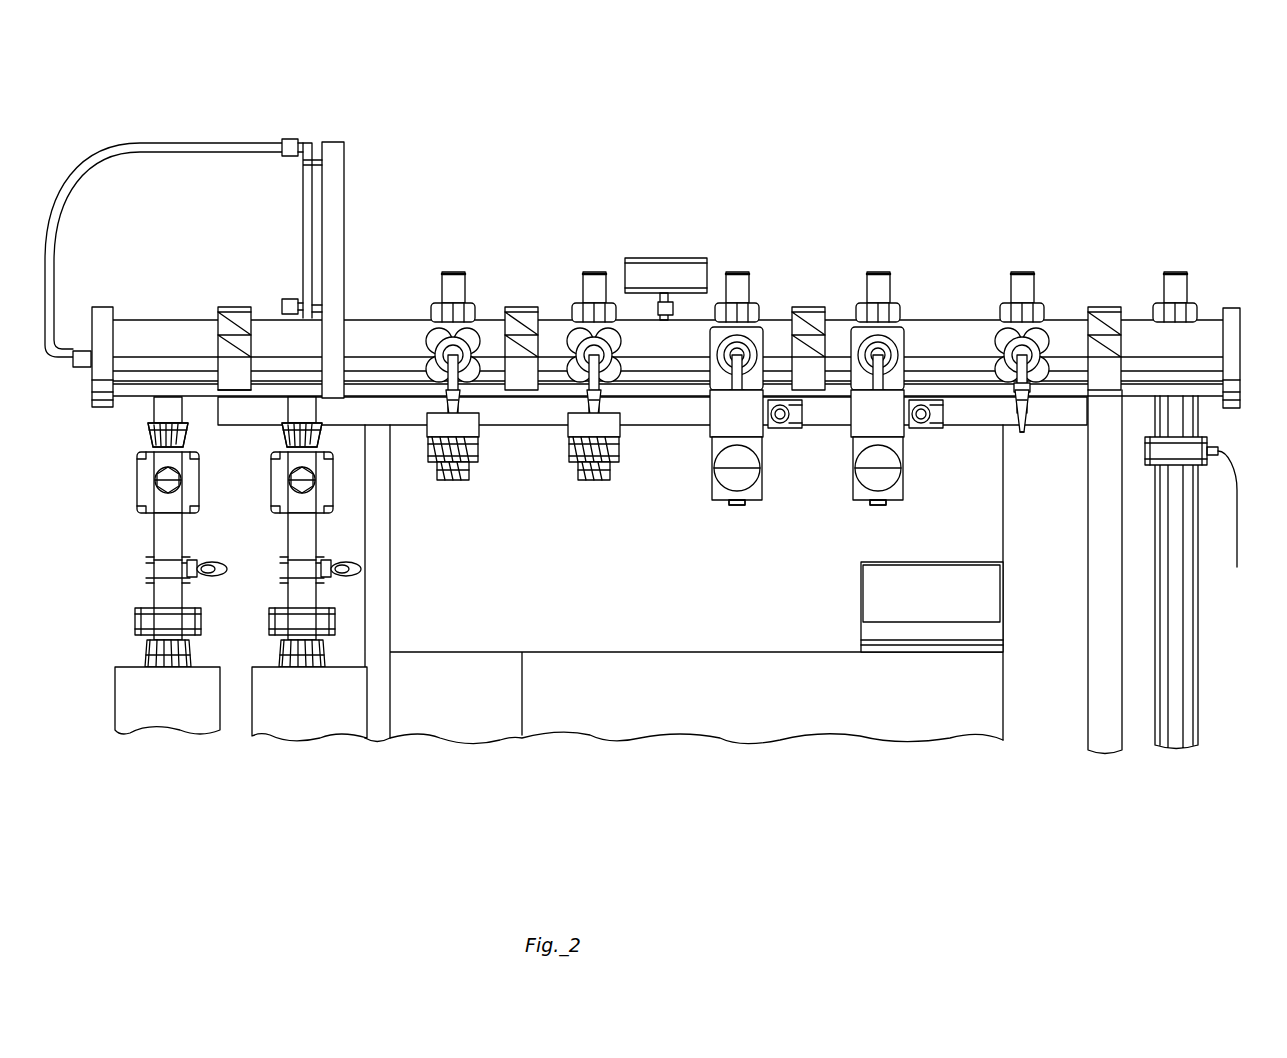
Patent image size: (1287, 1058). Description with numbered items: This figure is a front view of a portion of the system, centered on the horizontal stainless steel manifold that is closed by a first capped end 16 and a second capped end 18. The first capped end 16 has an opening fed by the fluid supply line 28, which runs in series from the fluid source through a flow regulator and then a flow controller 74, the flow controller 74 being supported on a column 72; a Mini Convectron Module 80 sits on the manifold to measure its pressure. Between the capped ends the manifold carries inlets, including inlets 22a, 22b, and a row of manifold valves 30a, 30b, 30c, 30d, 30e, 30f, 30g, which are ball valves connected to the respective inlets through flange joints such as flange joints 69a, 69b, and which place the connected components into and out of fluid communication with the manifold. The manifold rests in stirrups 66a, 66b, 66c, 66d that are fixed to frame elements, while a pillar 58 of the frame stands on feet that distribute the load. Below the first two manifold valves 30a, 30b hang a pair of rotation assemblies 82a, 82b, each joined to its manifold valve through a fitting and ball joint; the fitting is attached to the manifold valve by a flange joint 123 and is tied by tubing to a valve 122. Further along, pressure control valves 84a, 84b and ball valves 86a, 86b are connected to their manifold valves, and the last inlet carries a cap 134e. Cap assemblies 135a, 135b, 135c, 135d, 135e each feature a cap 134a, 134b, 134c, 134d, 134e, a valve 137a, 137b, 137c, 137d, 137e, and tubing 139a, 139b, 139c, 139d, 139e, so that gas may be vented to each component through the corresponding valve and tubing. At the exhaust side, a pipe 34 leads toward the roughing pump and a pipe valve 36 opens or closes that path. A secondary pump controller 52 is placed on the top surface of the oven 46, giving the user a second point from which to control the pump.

The first capped end 16 is at (84, 326).
The second capped end 18 is at (1234, 299).
The inlet 22a is at (155, 403).
The inlet 22b is at (345, 405).
The fluid supply line 28 is at (195, 143).
The manifold valve 30a is at (140, 532).
The manifold valve 30b is at (283, 532).
The manifold valve 30c is at (471, 388).
The manifold valve 30d is at (613, 388).
The manifold valve 30e is at (756, 388).
The manifold valve 30f is at (886, 388).
The manifold valve 30g is at (1024, 388).
The pipe 34 is at (1200, 640).
The pipe valve 36 is at (1213, 447).
The oven 46 is at (645, 640).
The secondary pump controller 52 is at (948, 562).
The pillar 58 is at (1088, 680).
The stirrup 66a is at (232, 307).
The stirrup 66b is at (520, 307).
The stirrup 66c is at (808, 307).
The stirrup 66d is at (1103, 307).
The flange joint 69a is at (150, 437).
The flange joint 69b is at (285, 437).
The column 72 is at (344, 150).
The flow controller 74 is at (314, 144).
The Mini Convectron Module 80 is at (670, 258).
The rotation assembly 82a is at (106, 692).
The rotation assembly 82b is at (243, 692).
The pressure control valve 84a is at (486, 474).
The pressure control valve 84b is at (627, 474).
The ball valve 86a is at (772, 473).
The ball valve 86b is at (913, 473).
The valve 122 is at (216, 548).
The flange joint 123 is at (346, 550).
The cap 134a is at (475, 395).
The cap 134b is at (616, 395).
The cap 134c is at (762, 395).
The cap 134d is at (903, 395).
The cap 134e is at (1030, 392).
The cap assembly 135a is at (433, 395).
The cap assembly 135b is at (574, 395).
The cap assembly 135c is at (717, 395).
The cap assembly 135d is at (858, 395).
The cap assembly 135e is at (1008, 394).
The valve 137a is at (453, 482).
The valve 137b is at (594, 482).
The valve 137c is at (737, 506).
The valve 137d is at (878, 506).
The valve 137e is at (1022, 434).
The tubing 139a is at (438, 381).
The tubing 139b is at (579, 381).
The tubing 139c is at (722, 381).
The tubing 139d is at (863, 381).
The tubing 139e is at (1007, 381).